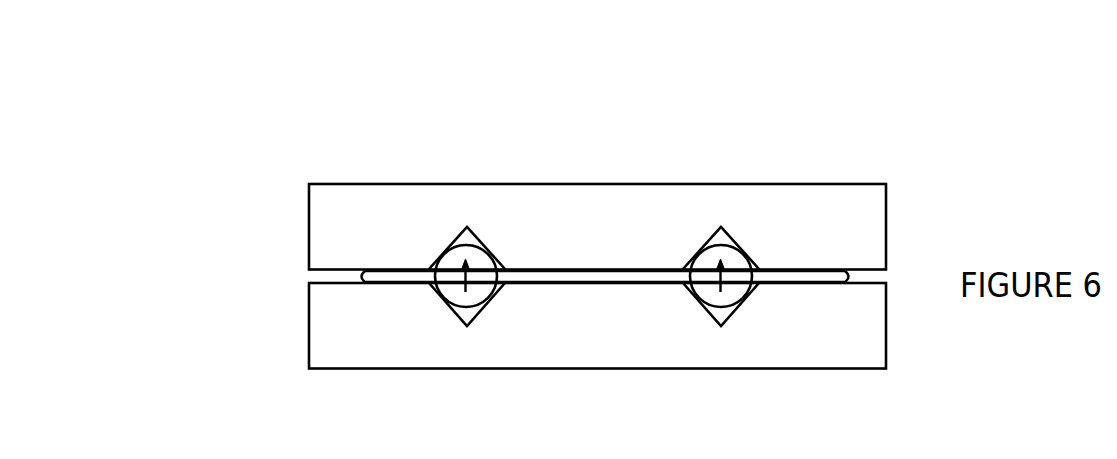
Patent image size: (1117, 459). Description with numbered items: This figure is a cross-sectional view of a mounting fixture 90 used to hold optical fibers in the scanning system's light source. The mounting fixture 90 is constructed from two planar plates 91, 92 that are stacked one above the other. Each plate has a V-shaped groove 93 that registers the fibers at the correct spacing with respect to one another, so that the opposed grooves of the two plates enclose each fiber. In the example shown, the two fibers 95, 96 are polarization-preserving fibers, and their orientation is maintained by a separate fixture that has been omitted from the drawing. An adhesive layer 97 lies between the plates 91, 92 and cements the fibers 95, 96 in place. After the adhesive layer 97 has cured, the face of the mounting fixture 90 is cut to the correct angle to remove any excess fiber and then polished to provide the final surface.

The mounting fixture 90 is at (191, 129).
The planar plate 91 is at (804, 193).
The planar plate 92 is at (573, 362).
The V-shaped groove 93 is at (715, 237).
The polarization-preserving fiber 95 is at (480, 283).
The polarization-preserving fiber 96 is at (716, 310).
The adhesive layer 97 is at (812, 275).